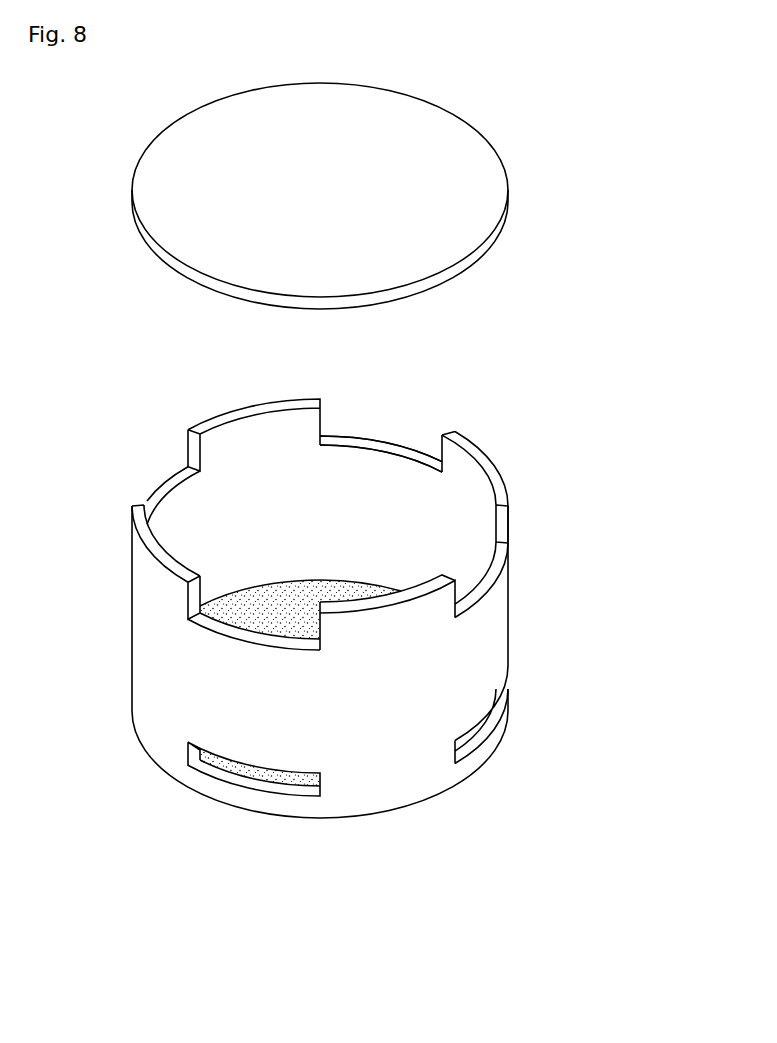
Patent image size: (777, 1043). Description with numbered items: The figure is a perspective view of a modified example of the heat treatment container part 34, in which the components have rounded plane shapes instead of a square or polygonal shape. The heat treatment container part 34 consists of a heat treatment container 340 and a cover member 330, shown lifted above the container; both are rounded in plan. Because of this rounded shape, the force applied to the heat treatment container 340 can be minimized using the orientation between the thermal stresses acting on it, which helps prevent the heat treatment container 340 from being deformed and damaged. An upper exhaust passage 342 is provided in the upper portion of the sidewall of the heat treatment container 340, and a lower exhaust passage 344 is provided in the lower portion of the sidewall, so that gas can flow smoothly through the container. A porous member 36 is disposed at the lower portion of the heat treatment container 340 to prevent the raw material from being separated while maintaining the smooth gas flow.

The heat treatment container part 34 is at (633, 272).
The cover member 330 is at (507, 233).
The heat treatment container 340 is at (493, 473).
The upper exhaust passage 342 is at (393, 444).
The lower exhaust passage 344 is at (258, 786).
The porous member 36 is at (279, 600).